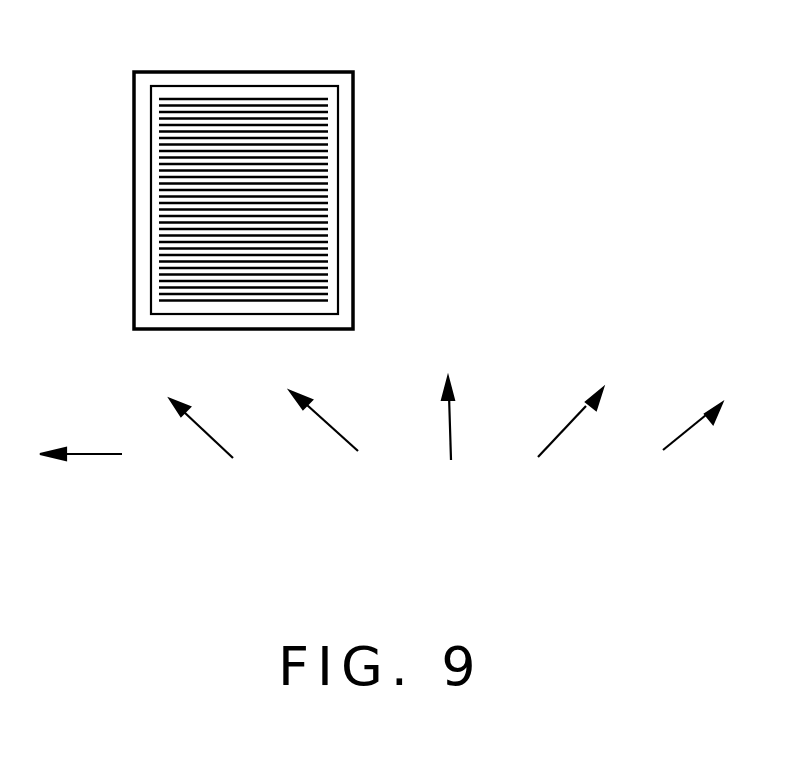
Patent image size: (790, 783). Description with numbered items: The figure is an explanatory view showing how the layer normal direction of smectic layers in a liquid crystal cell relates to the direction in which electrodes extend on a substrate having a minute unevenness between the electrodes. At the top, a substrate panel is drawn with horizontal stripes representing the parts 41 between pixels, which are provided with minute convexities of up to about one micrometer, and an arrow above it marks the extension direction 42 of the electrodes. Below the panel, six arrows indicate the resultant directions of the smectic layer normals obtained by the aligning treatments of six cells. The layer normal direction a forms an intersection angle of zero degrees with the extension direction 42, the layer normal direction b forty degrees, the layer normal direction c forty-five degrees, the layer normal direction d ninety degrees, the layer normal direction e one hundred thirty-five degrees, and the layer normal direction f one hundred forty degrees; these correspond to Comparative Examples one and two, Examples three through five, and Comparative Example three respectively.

The parts between pixels 41 is at (313, 132).
The extension direction of electrodes 42 is at (273, 29).
The layer normal direction at 0 degree a is at (86, 484).
The layer normal direction at 40 degrees b is at (208, 460).
The layer normal direction at 45 degrees c is at (334, 456).
The layer normal direction at 90 degrees d is at (452, 449).
The layer normal direction at 135 degrees e is at (570, 454).
The layer normal direction at 140 degrees f is at (684, 462).